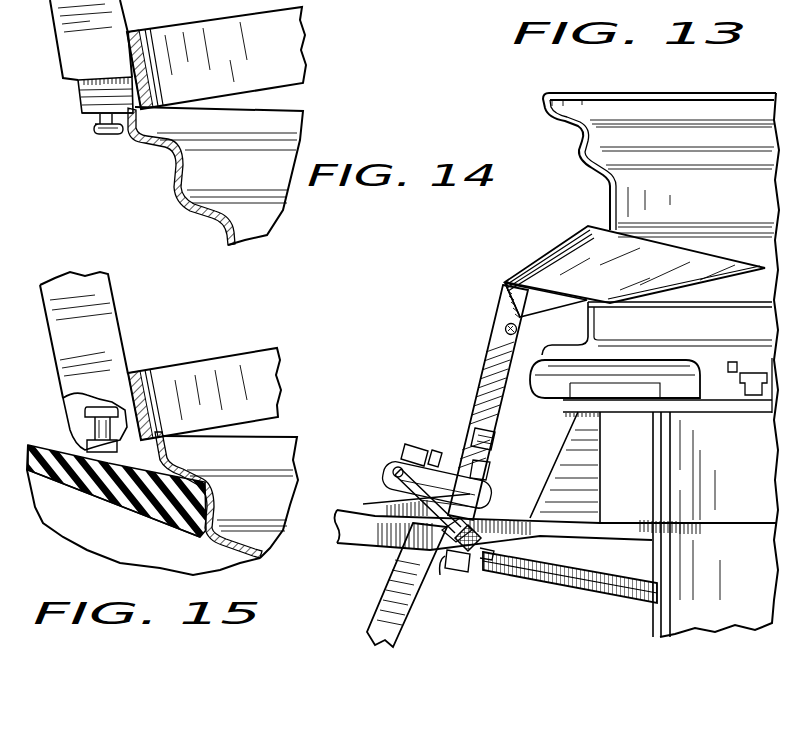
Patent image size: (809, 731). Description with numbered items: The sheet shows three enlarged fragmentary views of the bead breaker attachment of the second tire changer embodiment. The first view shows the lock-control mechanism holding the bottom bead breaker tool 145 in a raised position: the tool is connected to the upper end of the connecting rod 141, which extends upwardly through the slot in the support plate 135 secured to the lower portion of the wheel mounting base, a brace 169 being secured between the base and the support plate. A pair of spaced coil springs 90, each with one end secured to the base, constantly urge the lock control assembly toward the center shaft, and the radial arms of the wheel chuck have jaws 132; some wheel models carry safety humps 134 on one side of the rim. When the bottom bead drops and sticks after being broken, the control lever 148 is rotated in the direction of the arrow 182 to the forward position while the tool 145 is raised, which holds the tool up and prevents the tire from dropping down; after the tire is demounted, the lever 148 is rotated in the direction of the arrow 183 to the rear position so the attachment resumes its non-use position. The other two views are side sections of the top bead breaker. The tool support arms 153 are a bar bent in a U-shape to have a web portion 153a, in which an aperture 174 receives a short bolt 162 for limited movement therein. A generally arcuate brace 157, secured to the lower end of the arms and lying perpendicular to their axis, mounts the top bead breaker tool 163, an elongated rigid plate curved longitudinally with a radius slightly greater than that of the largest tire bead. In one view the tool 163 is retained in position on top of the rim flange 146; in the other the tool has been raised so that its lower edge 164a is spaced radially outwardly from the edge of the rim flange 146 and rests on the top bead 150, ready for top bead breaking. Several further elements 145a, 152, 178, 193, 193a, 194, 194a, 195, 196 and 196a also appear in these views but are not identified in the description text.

In FIG. 13, the coil springs 90 is at (578, 593).
In FIG. 13, the jaws 132 is at (568, 363).
In FIG. 13, the safety humps 134 is at (578, 167).
In FIG. 13, the support plate 135 is at (553, 540).
In FIG. 13, the connecting rod 141 is at (400, 645).
In FIG. 13, the bottom bead breaker tool 145 is at (565, 240).
In FIG. 13, the panel corner 145a is at (507, 292).
In FIG. 14, the rim flange 146 is at (151, 134).
In FIG. 15, the rim flange 146 is at (190, 464).
In FIG. 13, the rim flange 146 is at (543, 100).
In FIG. 13, the control lever 148 is at (440, 570).
In FIG. 15, the top bead 150 is at (160, 525).
In FIG. 13, the bolt 152 is at (488, 430).
In FIG. 14, the tool support arms 153 is at (91, 40).
In FIG. 15, the tool support arms 153 is at (100, 302).
In FIG. 14, the web portion 153a is at (82, 113).
In FIG. 14, the arcuate brace 157 is at (88, 78).
In FIG. 14, the short bolt 162 is at (126, 132).
In FIG. 15, the short bolt 162 is at (72, 394).
In FIG. 14, the top bead breaker tool 163 is at (226, 40).
In FIG. 15, the top bead breaker tool 163 is at (247, 367).
In FIG. 15, the lower edge 164a is at (112, 488).
In FIG. 13, the brace 169 is at (590, 477).
In FIG. 15, the aperture 174 is at (88, 432).
In FIG. 13, the pivot arm 178 is at (504, 330).
In FIG. 13, the arrow 182 is at (380, 424).
In FIG. 13, the arrow 183 is at (367, 461).
In FIG. 13, the clamp body 193 is at (383, 480).
In FIG. 13, the clamp rod 193a is at (480, 500).
In FIG. 13, the clamp jaw 194 is at (412, 442).
In FIG. 13, the clamp jaw tab 194a is at (432, 450).
In FIG. 13, the pin 195 is at (486, 464).
In FIG. 13, the nut 196 is at (455, 560).
In FIG. 13, the nut tab 196a is at (455, 575).